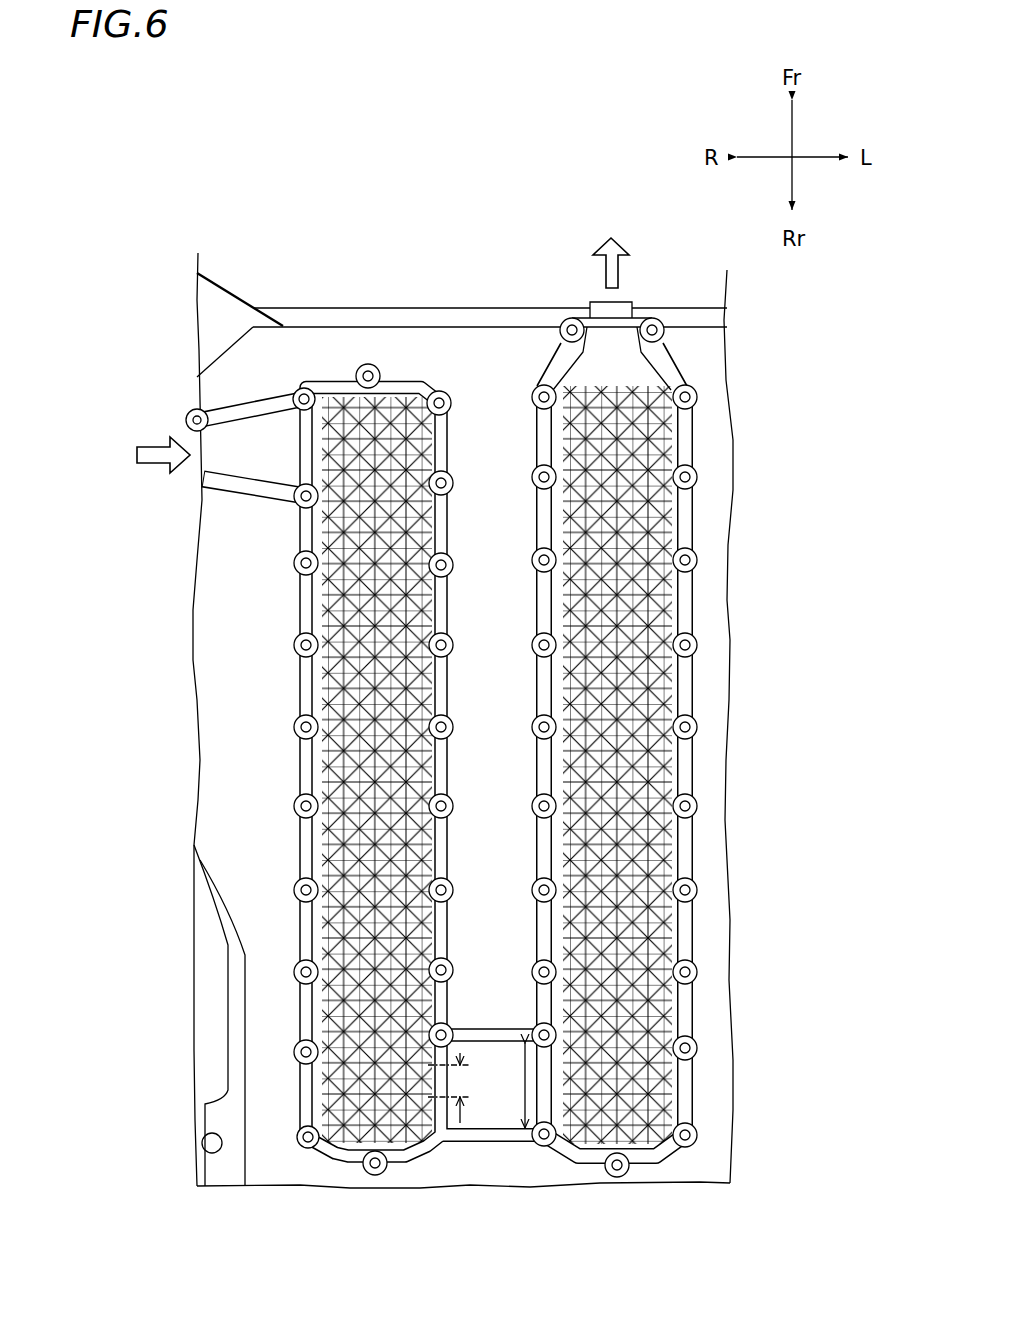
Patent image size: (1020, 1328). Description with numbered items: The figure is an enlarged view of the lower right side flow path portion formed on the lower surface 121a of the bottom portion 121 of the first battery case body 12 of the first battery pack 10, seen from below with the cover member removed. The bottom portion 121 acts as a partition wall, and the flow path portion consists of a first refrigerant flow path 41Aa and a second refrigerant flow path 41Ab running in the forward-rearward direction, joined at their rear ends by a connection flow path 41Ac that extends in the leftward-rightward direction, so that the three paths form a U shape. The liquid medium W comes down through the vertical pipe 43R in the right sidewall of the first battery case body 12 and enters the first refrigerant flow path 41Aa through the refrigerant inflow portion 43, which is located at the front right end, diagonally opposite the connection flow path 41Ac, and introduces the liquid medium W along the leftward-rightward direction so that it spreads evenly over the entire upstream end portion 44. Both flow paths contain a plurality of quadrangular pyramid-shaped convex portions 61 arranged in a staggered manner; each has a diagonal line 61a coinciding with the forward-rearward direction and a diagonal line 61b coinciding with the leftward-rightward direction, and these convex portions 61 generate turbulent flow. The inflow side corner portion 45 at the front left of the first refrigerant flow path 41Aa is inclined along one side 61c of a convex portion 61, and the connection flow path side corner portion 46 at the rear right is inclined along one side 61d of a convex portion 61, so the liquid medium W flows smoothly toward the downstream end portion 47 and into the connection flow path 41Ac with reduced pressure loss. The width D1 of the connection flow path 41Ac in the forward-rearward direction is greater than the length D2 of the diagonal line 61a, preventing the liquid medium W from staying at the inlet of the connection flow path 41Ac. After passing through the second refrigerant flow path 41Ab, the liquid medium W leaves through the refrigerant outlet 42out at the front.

The first battery pack 10 is at (202, 160).
The first battery case body 12 is at (272, 262).
The bottom portion 121 is at (690, 306).
The lower surface 121a is at (215, 770).
The first refrigerant flow path 41Aa is at (345, 852).
The second refrigerant flow path 41Ab is at (692, 768).
The connection flow path 41Ac is at (493, 1110).
The refrigerant outlet 42out is at (610, 310).
The refrigerant inflow portion 43 is at (265, 450).
The vertical pipe 43R is at (197, 440).
The upstream end portion 44 is at (425, 388).
The inflow side corner portion 45 is at (439, 391).
The connection flow path side corner portion 46 is at (338, 1138).
The downstream end portion 47 is at (368, 1173).
The convex portion 61 is at (298, 538).
The diagonal line 61a is at (290, 403).
The diagonal line 61b is at (360, 385).
The one side of convex portion 61c is at (412, 390).
The one side of convex portion 61d is at (300, 1133).
The liquid medium W is at (615, 236).
The width of connection flow path D1 is at (542, 1085).
The length of diagonal line D2 is at (461, 1088).